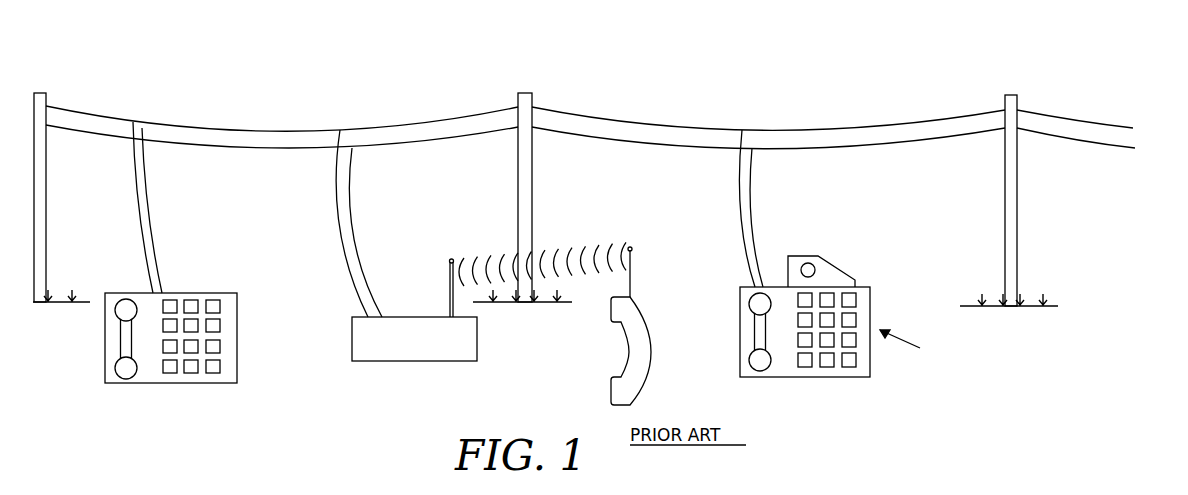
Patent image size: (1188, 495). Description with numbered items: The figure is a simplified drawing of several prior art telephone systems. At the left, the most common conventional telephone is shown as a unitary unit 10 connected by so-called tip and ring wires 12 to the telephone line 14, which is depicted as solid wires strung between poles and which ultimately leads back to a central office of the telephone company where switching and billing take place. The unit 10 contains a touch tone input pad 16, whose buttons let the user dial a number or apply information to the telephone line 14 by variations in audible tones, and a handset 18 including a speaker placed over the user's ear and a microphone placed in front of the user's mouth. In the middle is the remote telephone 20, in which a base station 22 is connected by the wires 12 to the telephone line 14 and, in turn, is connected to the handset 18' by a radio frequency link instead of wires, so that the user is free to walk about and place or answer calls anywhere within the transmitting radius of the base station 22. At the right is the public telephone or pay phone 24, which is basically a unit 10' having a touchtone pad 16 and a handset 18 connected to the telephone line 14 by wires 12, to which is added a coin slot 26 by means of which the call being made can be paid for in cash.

The unitary unit 10 is at (203, 327).
The unit 10' is at (837, 321).
The tip and ring wires 12 is at (152, 232).
The telephone line 14 is at (1075, 122).
The touch tone input pad 16 is at (195, 345).
The handset 18 is at (412, 336).
The handset 18' is at (655, 326).
The remote telephone 20 is at (554, 346).
The base station 22 is at (407, 345).
The pay phone 24 is at (912, 344).
The coin slot 26 is at (808, 263).